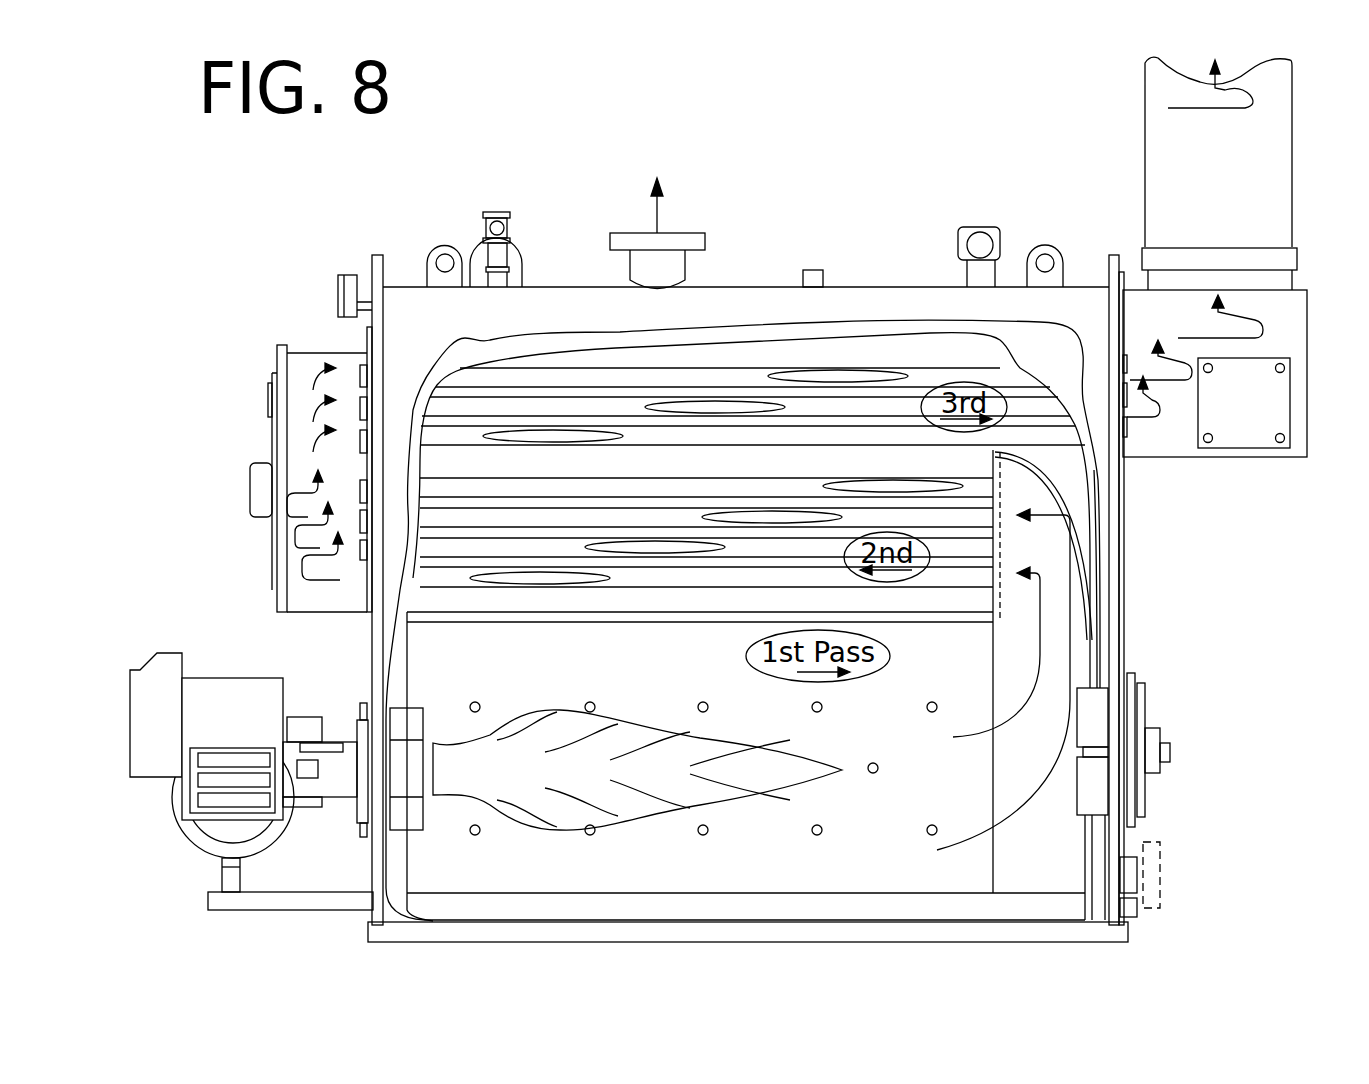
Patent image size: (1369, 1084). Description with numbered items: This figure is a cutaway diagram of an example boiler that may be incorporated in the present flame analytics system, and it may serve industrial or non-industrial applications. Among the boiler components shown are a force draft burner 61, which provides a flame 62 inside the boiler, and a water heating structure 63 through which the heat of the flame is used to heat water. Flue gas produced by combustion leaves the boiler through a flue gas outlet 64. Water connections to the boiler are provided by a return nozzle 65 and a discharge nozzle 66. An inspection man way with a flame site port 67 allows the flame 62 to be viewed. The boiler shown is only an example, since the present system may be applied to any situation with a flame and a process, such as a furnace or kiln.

The force draft burner 61 is at (152, 827).
The flame 62 is at (644, 712).
The water heating structure 63 is at (374, 658).
The flue gas outlet 64 is at (1156, 158).
The return nozzle 65 is at (1178, 865).
The discharge nozzle 66 is at (728, 232).
The inspection man way with a flame site port 67 is at (1175, 712).